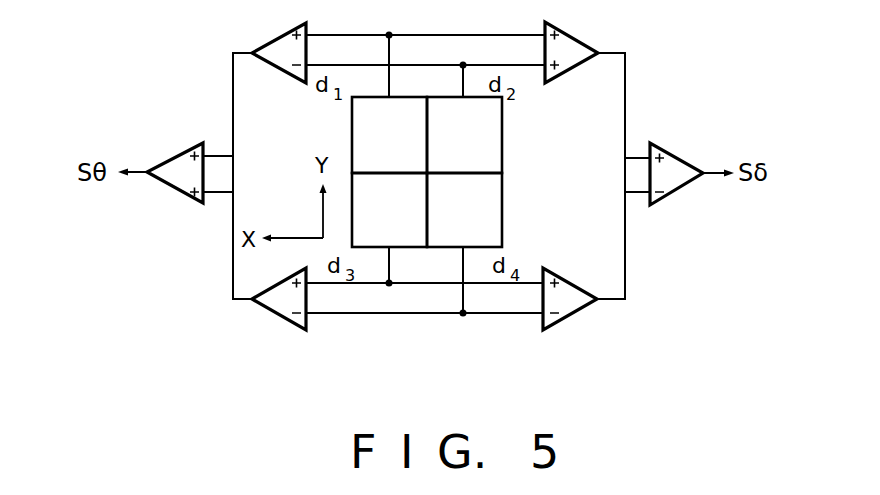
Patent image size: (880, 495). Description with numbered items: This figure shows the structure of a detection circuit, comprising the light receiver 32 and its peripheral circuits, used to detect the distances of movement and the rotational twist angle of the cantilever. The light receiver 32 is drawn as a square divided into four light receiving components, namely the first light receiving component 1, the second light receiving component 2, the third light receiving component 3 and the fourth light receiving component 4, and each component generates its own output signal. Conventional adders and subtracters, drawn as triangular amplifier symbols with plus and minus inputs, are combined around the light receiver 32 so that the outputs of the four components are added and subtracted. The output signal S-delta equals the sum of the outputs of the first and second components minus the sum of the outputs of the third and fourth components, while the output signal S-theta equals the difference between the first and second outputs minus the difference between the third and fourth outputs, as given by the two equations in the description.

The light receiver 32 is at (455, 172).
The detector quadrant D1 1 is at (389, 135).
The detector quadrant D2 2 is at (464, 135).
The detector quadrant D3 3 is at (389, 210).
The detector quadrant D4 4 is at (464, 210).